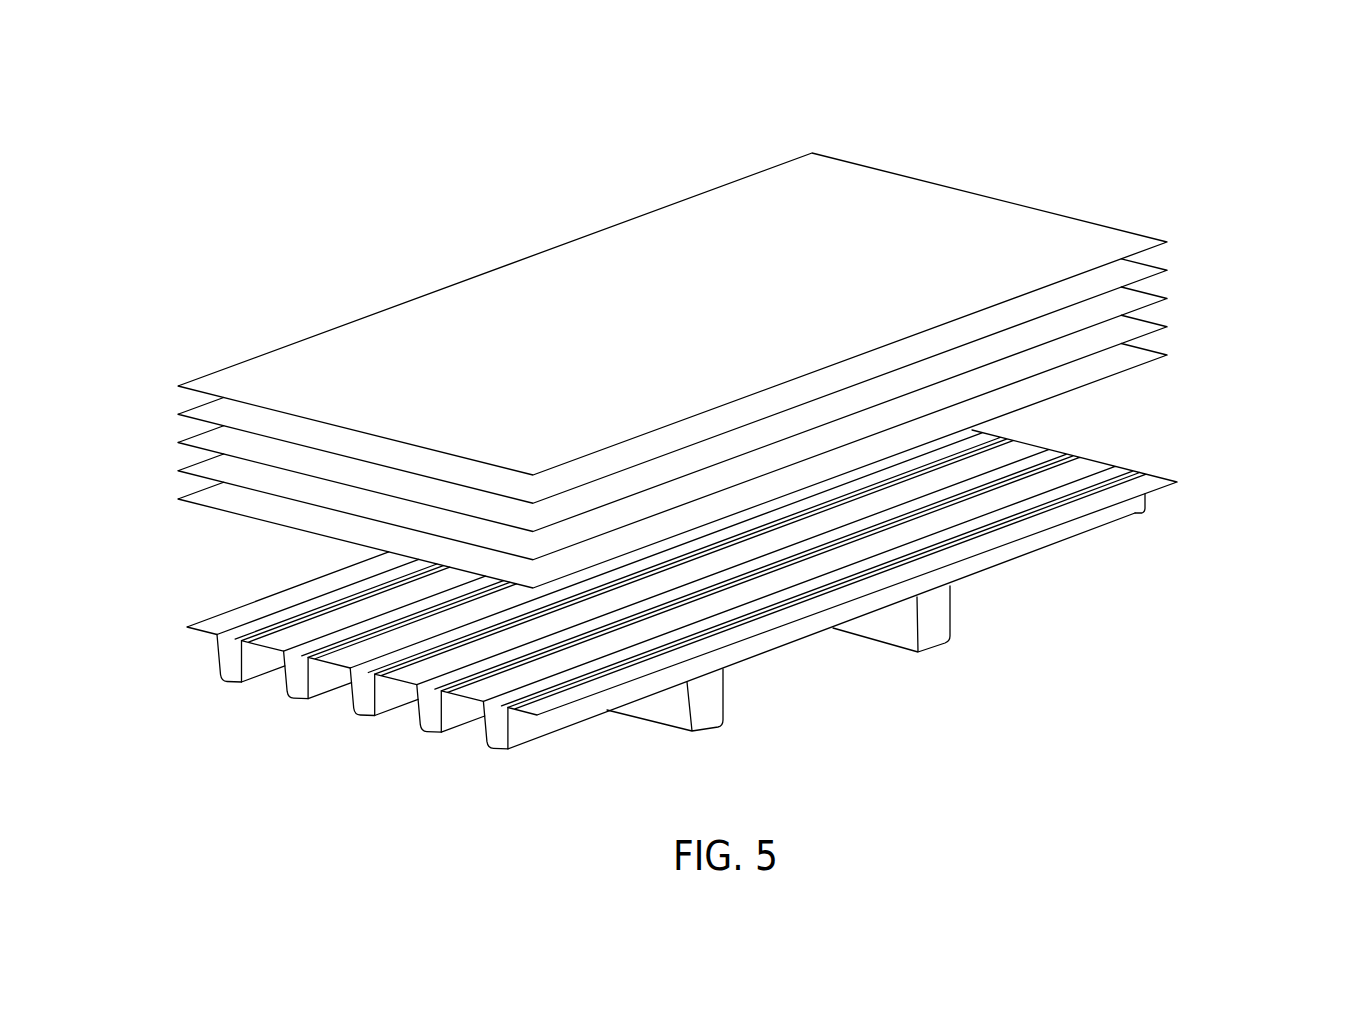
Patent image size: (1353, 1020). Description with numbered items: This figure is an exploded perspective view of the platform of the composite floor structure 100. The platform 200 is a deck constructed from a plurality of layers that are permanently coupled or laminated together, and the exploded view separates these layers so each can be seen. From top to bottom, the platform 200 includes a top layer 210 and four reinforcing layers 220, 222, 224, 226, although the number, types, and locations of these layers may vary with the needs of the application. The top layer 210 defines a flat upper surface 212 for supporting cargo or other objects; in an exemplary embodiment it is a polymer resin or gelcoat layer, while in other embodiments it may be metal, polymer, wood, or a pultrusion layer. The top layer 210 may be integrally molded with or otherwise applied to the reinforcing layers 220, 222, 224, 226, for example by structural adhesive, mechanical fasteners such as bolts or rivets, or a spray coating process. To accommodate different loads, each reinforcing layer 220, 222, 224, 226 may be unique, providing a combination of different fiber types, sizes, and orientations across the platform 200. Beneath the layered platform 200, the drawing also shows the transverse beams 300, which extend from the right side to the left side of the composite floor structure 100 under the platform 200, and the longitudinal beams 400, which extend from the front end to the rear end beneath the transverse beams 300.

The composite floor structure 100 is at (701, 422).
The platform 200 is at (701, 370).
The top layer 210 is at (672, 314).
The flat upper surface 212 is at (679, 324).
The reinforcing layer 220 is at (176, 417).
The reinforcing layer 222 is at (177, 445).
The reinforcing layer 224 is at (178, 473).
The reinforcing layer 226 is at (202, 507).
The transverse beams 300 is at (233, 666).
The longitudinal beams 400 is at (707, 709).